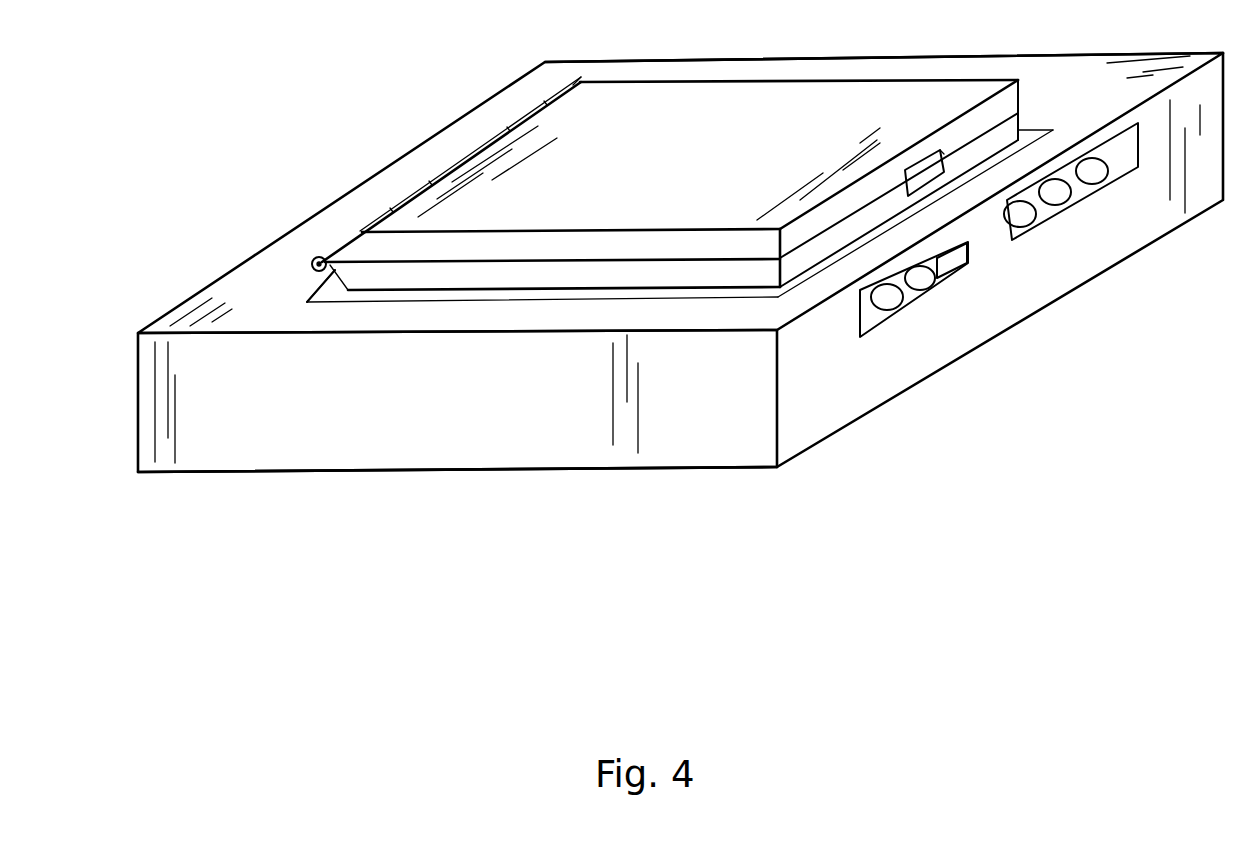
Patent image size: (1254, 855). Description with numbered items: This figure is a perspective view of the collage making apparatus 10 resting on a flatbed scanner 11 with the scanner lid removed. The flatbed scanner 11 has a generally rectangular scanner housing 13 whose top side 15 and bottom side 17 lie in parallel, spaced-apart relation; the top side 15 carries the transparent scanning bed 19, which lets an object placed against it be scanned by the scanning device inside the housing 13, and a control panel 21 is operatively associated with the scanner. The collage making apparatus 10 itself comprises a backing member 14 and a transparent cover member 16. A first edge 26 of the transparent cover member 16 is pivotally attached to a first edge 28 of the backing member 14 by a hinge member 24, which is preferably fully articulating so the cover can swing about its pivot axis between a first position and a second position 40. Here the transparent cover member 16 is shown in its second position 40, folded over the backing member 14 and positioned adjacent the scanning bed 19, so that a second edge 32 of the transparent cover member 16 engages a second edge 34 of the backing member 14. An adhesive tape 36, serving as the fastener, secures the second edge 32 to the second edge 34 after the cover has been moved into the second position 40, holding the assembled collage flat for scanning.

The portable electronic device 10 is at (467, 160).
The flatbed scanner 11 is at (218, 476).
The scanner housing 13 is at (611, 472).
The backing member 14 is at (710, 166).
The top side 15 is at (702, 62).
The transparent cover member 16 is at (755, 270).
The bottom side 17 is at (445, 472).
The scanning bed 19 is at (832, 270).
The control panel 21 is at (1017, 238).
The hinge member 24 is at (311, 264).
The first edge of transparent cover member 26 is at (310, 282).
The first edge of backing member 28 is at (338, 247).
The second edge of transparent cover member 32 is at (1035, 132).
The second edge of backing member 34 is at (1022, 130).
The adhesive tape 36 is at (938, 148).
The second position 40 is at (423, 278).